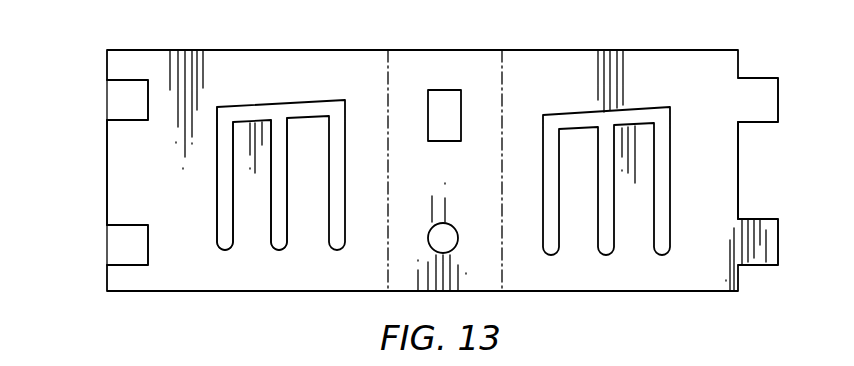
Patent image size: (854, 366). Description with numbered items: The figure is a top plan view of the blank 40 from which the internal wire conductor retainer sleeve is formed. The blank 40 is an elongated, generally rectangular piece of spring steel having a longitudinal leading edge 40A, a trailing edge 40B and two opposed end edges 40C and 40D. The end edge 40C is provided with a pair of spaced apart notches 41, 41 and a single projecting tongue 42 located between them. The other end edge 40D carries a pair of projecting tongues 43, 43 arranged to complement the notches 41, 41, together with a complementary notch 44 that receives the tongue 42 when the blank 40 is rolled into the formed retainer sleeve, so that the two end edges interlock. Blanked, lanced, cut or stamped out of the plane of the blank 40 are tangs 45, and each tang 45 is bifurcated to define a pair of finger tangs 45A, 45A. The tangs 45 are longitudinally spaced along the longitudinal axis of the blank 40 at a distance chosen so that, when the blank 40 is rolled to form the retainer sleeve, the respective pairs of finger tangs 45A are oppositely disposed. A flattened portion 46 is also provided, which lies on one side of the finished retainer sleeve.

The blank 40 is at (176, 300).
The leading edge 40A is at (543, 50).
The trailing edge 40B is at (593, 293).
The end edge 40C is at (104, 190).
The end edge 40D is at (742, 201).
The notches 41 is at (147, 100).
The projecting tongue 42 is at (123, 168).
The projecting tongues 43 is at (767, 88).
The complementary notch 44 is at (740, 165).
The tangs 45 is at (310, 201).
The finger tangs 45A is at (243, 133).
The flattened portion 46 is at (452, 68).